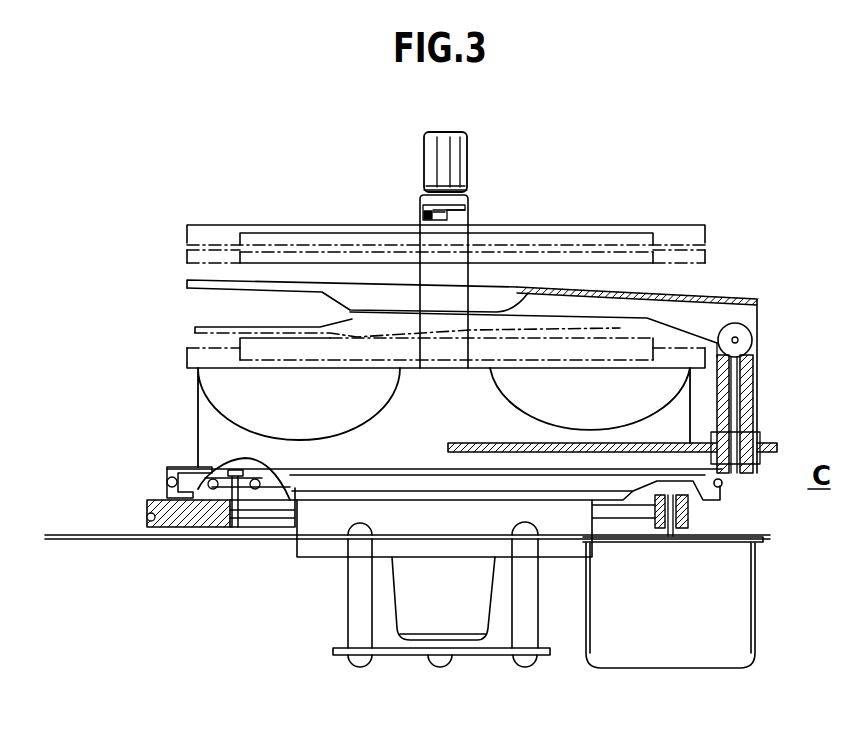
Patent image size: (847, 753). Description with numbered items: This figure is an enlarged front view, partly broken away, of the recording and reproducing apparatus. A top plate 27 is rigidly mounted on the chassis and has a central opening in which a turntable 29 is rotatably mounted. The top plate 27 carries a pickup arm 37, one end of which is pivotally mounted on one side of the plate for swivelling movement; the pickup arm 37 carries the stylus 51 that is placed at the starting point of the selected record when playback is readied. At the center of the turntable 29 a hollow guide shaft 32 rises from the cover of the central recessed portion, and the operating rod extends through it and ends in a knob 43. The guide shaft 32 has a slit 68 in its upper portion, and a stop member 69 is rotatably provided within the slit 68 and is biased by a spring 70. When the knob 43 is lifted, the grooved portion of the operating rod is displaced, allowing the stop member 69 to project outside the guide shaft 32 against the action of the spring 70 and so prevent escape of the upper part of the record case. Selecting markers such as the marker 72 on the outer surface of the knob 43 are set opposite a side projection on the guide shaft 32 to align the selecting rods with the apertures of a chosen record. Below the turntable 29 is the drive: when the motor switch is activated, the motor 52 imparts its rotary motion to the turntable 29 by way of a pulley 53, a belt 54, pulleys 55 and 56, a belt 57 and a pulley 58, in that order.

The top plate 27 is at (777, 450).
The turntable 29 is at (200, 425).
The hollow guide shaft 32 is at (465, 272).
The pickup arm 37 is at (707, 307).
The knob 43 is at (468, 153).
The stylus 51 is at (352, 325).
The motor 52 is at (663, 658).
The pulley 53 is at (688, 508).
The belt 54 is at (630, 520).
The pulley 55 is at (172, 528).
The pulley 56 is at (239, 490).
The belt 57 is at (167, 482).
The pulley 58 is at (167, 470).
The slit 68 is at (422, 215).
The stop member 69 is at (463, 208).
The spring 70 is at (423, 201).
The marker 72 is at (447, 188).